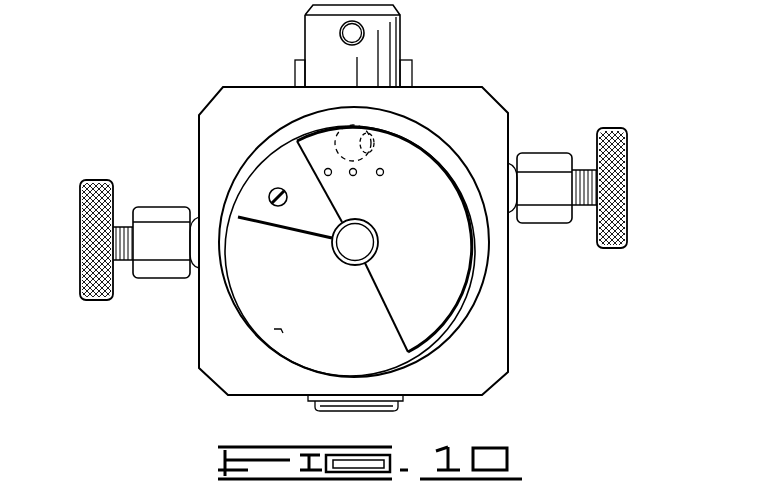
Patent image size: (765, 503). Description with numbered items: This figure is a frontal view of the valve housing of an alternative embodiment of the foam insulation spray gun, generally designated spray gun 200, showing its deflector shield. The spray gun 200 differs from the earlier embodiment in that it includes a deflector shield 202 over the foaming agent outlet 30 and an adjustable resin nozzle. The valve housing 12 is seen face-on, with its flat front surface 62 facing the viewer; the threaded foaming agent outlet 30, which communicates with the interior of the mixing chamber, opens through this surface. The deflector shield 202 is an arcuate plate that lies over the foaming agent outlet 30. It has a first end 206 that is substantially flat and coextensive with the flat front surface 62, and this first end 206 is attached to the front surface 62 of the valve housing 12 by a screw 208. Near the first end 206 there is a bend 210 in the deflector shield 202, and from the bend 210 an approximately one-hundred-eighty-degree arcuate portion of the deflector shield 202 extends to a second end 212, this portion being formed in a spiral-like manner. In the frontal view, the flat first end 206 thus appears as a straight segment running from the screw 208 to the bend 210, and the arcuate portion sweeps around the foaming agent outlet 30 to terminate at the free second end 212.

The spray gun 200 is at (353, 208).
The valve housing 12 is at (197, 336).
The foaming agent outlet 30 is at (376, 151).
The bend 210 is at (297, 147).
The screw 208 is at (273, 206).
The first end 206 is at (305, 219).
The deflector shield 202 is at (458, 272).
The second end 212 is at (398, 317).
The front surface 62 is at (278, 332).